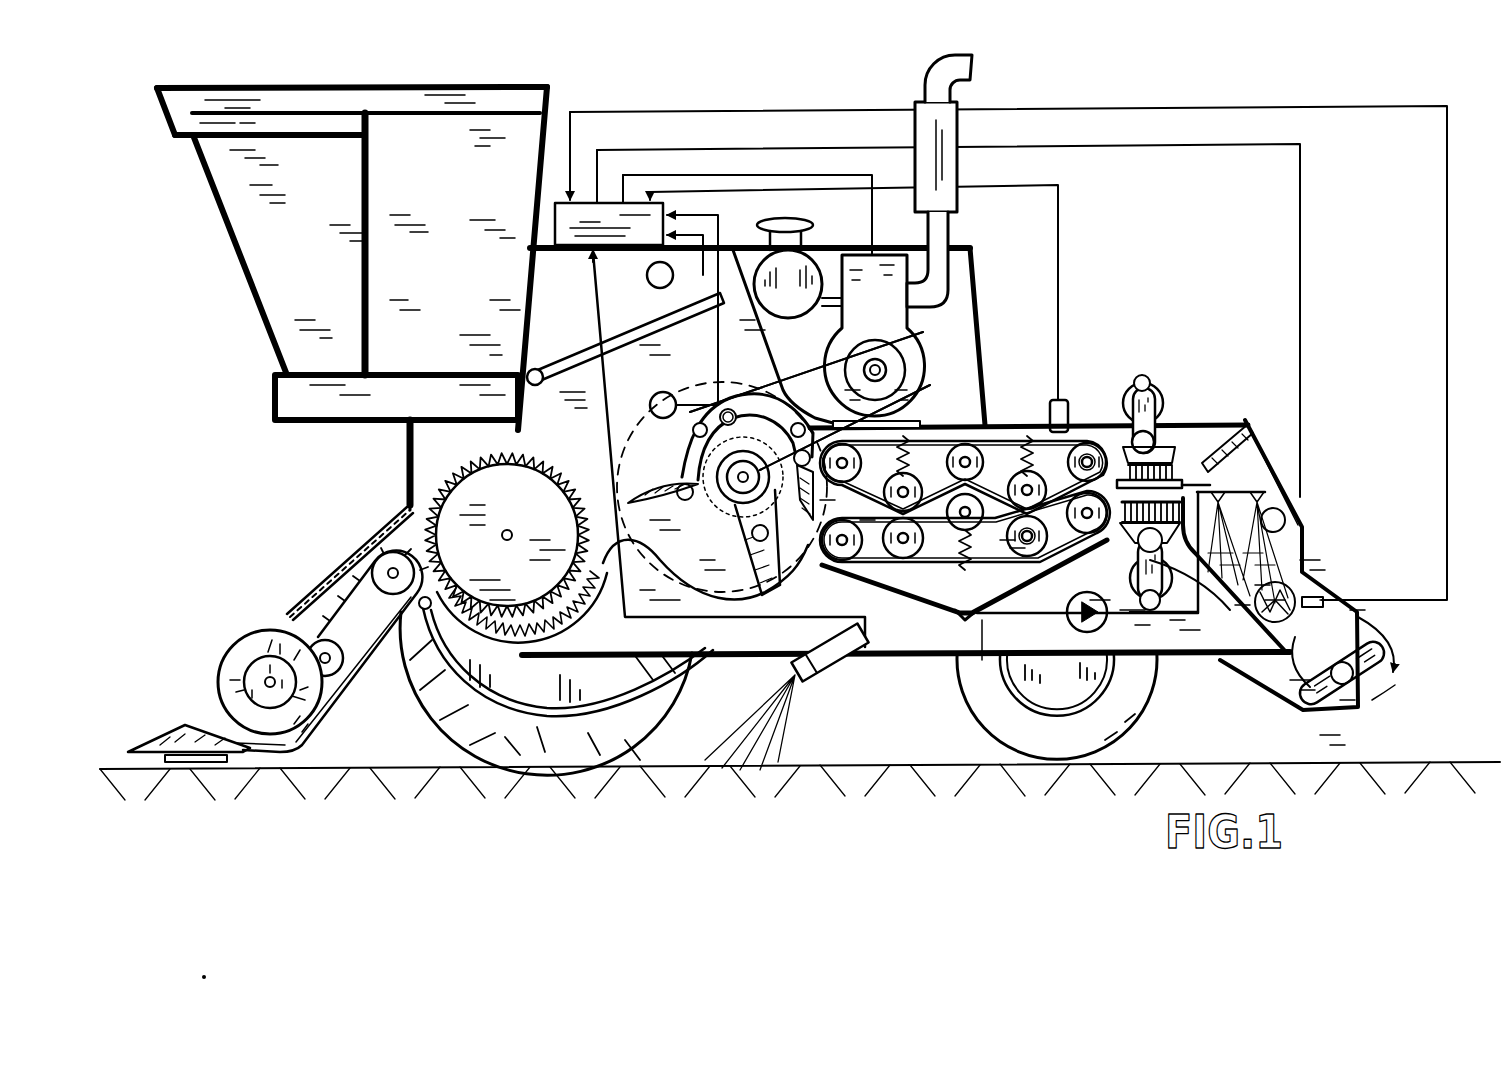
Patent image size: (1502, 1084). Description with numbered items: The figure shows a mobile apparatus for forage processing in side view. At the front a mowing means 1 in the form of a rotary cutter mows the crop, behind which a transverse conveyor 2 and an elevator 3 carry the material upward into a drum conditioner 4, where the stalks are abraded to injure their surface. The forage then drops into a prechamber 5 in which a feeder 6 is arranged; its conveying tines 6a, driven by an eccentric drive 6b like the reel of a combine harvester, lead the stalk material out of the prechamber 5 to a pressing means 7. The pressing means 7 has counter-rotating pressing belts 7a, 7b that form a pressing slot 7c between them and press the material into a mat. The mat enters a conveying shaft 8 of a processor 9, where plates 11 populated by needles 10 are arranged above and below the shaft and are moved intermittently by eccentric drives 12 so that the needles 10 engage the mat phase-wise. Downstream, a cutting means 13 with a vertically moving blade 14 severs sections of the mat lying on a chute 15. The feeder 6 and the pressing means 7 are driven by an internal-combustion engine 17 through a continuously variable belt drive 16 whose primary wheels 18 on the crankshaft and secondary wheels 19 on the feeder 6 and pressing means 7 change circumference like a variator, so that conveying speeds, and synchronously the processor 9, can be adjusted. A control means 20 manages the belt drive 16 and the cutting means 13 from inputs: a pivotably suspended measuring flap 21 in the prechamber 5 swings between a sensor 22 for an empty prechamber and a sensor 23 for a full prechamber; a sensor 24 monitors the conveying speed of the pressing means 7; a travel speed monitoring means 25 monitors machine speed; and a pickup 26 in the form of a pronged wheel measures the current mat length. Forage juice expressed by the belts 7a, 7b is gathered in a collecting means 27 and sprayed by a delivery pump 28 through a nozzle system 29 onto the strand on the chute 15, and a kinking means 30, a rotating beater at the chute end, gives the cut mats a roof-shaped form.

The mowing means 1 is at (193, 752).
The transverse conveyor 2 is at (264, 660).
The elevator 3 is at (353, 567).
The drum conditioner 4 is at (470, 498).
The prechamber 5 is at (657, 343).
The feeder 6 is at (733, 508).
The conveying tines 6a is at (672, 510).
The eccentric drive 6b is at (698, 432).
The pressing means 7 is at (913, 548).
The pressing belt 7a is at (933, 547).
The pressing belt 7b is at (995, 565).
The pressing slot 7c is at (1090, 410).
The conveying shaft 8 is at (1213, 460).
The processor 9 is at (1110, 427).
The needles 10 is at (1197, 457).
The plates 11 is at (1178, 465).
The eccentric drives 12 is at (1158, 387).
The cutting means 13 is at (1250, 468).
The blade 14 is at (1255, 433).
The chute 15 is at (1224, 590).
The belt drive 16 is at (880, 365).
The internal-combustion engine 17 is at (886, 300).
The primary wheels 18 is at (837, 340).
The secondary wheels 19 is at (797, 577).
The control means 20 is at (603, 222).
The measuring flap 21 is at (572, 360).
The sensor 22 is at (650, 397).
The sensor 23 is at (647, 275).
The sensor 24 is at (1055, 400).
The travel speed monitoring means 25 is at (835, 675).
The pickup 26 is at (1297, 594).
The collecting means 27 is at (987, 612).
The delivery pump 28 is at (1082, 634).
The nozzle system 29 is at (1223, 455).
The kinking means 30 is at (1373, 683).